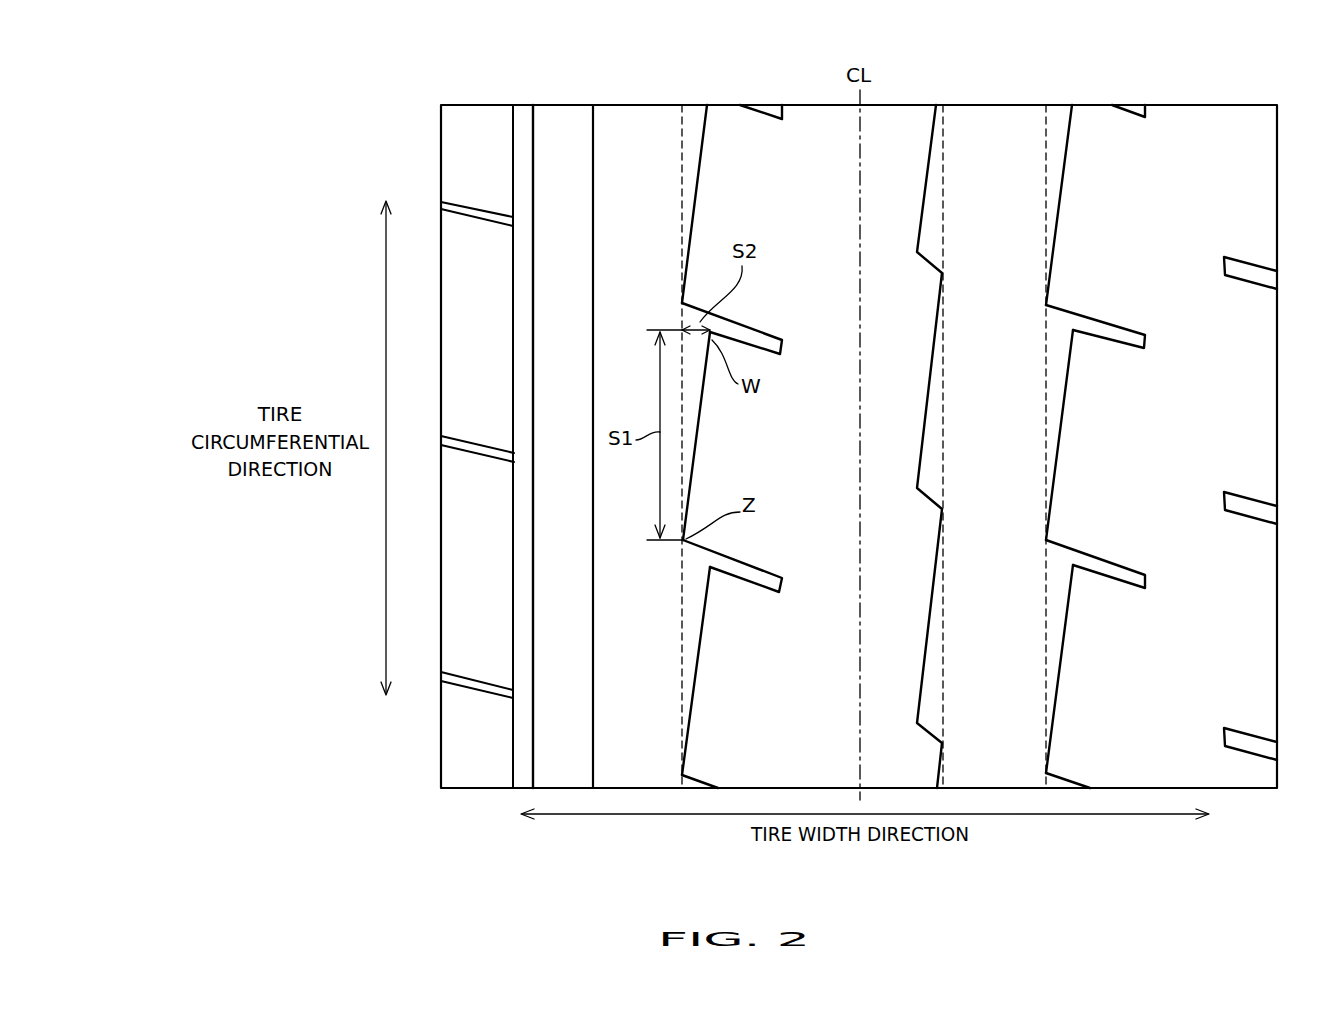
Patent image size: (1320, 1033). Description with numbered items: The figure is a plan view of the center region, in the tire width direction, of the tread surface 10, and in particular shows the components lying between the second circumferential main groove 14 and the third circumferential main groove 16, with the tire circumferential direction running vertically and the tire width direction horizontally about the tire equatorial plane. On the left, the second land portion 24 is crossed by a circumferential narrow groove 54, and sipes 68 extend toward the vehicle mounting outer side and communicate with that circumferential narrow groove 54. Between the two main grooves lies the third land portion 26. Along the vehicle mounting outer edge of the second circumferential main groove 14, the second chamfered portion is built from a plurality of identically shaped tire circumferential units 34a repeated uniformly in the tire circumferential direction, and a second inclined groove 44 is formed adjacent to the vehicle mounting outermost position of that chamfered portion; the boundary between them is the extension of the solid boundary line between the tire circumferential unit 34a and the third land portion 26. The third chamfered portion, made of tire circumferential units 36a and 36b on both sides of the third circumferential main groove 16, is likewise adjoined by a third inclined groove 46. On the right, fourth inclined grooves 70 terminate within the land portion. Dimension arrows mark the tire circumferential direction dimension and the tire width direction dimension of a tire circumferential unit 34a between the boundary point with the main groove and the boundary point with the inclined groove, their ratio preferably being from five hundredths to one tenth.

The tread surface 10 is at (900, 90).
The second circumferential main groove 14 is at (648, 125).
The third circumferential main groove 16 is at (990, 125).
The second land portion 24 is at (490, 549).
The third land portion 26 is at (829, 504).
The tire circumferential unit 34a is at (695, 130).
The tire circumferential unit 36a is at (1058, 130).
The tire circumferential unit 36b is at (928, 258).
The second inclined groove 44 is at (745, 336).
The third inclined groove 46 is at (1113, 335).
The circumferential narrow groove 54 is at (521, 127).
The sipe 68 is at (490, 216).
The fourth inclined groove 70 is at (1250, 269).